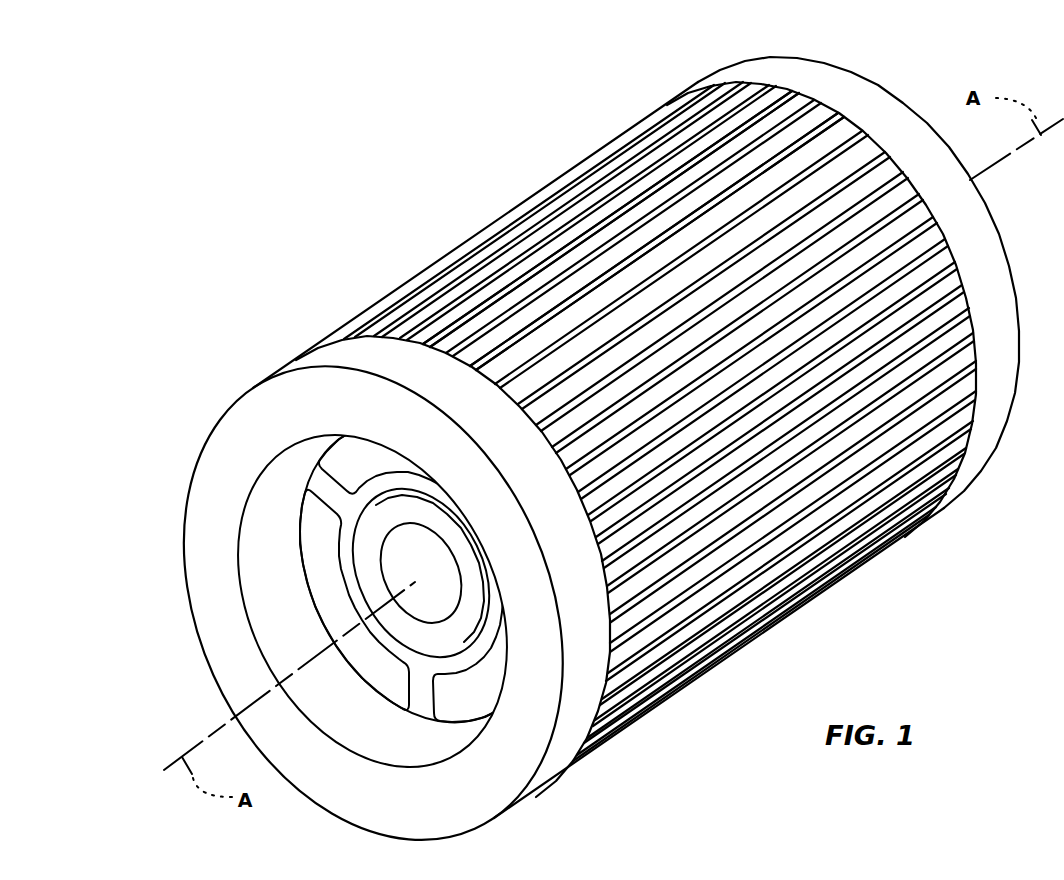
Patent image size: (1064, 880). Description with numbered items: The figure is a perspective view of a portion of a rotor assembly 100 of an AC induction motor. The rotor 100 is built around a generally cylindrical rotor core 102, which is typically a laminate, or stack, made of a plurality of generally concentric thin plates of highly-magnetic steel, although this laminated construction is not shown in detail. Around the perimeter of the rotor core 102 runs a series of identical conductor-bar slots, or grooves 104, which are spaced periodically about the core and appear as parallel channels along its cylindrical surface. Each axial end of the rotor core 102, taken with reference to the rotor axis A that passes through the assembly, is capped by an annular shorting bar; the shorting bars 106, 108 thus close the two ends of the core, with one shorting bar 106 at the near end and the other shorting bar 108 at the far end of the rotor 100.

The rotor assembly 100 is at (341, 125).
The rotor core 102 is at (591, 205).
The conductor-bar slots 104 is at (555, 275).
The annular shorting bar 106 is at (252, 390).
The annular shorting bar 108 is at (773, 57).